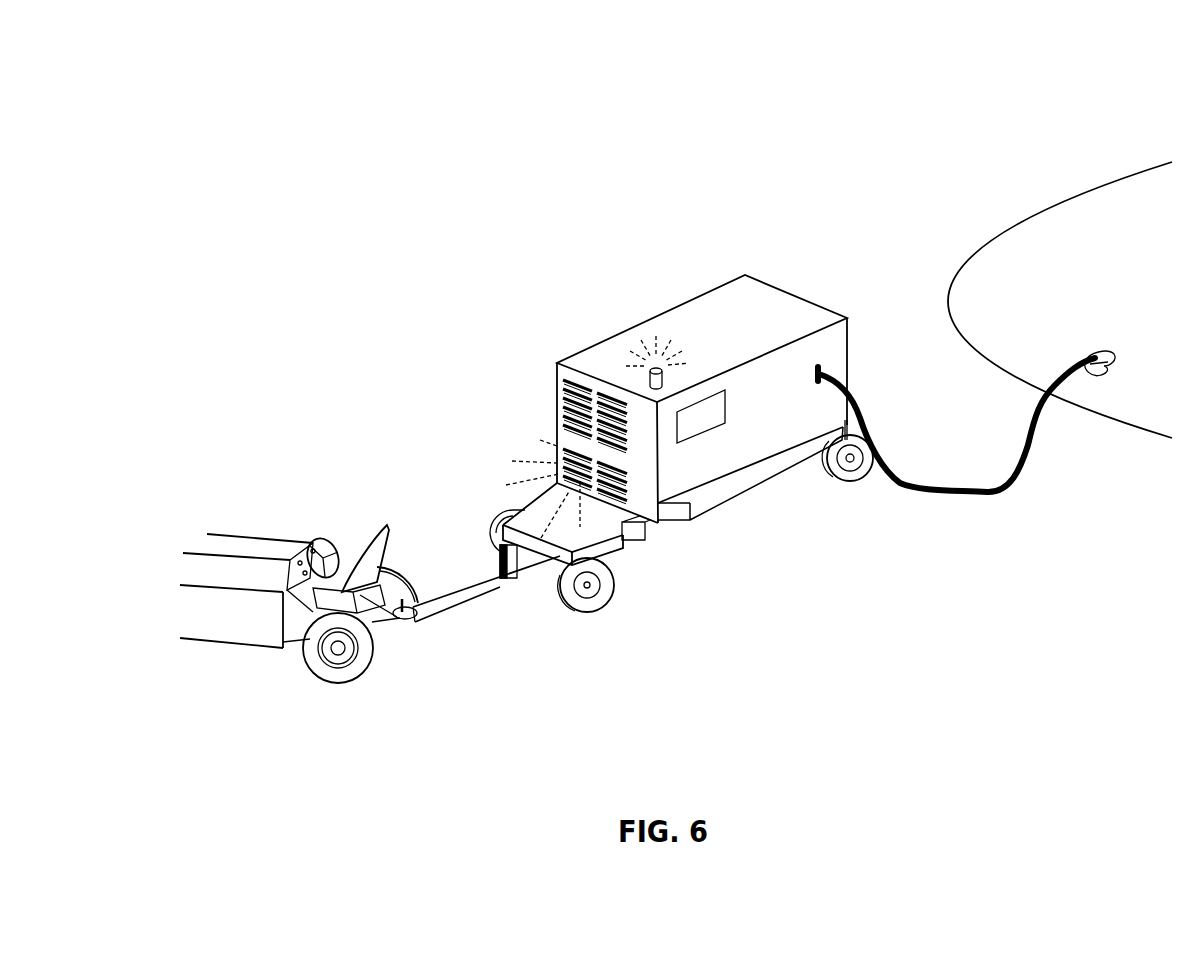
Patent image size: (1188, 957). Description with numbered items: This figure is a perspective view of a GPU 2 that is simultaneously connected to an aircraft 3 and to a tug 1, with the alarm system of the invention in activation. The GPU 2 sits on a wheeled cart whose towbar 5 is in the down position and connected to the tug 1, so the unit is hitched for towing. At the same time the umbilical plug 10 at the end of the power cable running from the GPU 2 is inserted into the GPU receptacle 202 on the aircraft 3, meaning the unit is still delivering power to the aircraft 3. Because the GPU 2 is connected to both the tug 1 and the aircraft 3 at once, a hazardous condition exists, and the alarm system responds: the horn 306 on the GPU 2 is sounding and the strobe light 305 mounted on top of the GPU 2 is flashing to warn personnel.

The tug 1 is at (291, 490).
The GPU 2 is at (577, 330).
The aircraft 3 is at (960, 230).
The towbar 5 is at (440, 598).
The umbilical plug 10 is at (1102, 353).
The GPU receptacle 202 is at (1108, 352).
The strobe light 305 is at (661, 348).
The horn 306 is at (545, 447).